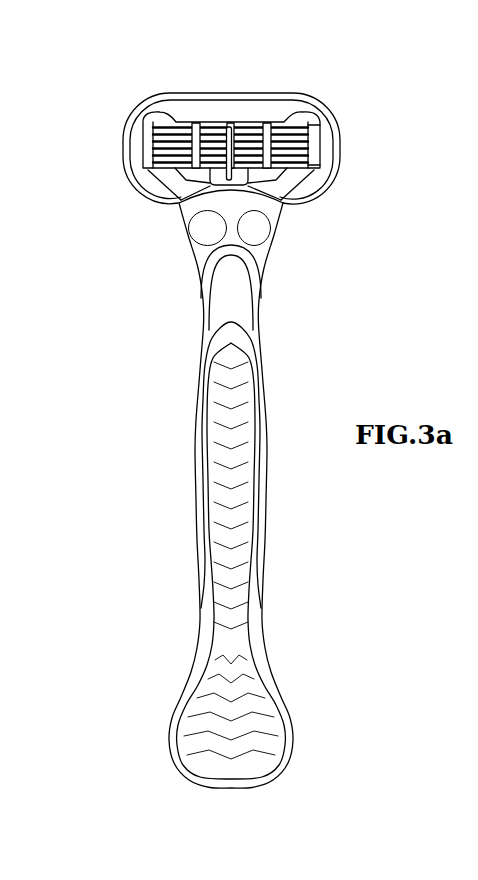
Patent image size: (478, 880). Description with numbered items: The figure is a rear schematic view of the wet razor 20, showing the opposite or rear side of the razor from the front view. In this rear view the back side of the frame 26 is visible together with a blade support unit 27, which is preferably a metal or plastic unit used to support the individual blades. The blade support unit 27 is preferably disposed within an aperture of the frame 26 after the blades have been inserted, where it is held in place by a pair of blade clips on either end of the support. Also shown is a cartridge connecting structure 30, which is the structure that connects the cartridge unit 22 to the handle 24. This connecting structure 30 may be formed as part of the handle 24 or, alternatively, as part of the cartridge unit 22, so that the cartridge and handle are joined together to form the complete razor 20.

The razor 20 is at (334, 84).
The cartridge unit 22 is at (124, 151).
The handle 24 is at (195, 500).
The frame 26 is at (277, 104).
The blade support unit 27 is at (316, 170).
The cartridge connecting structure 30 is at (295, 196).